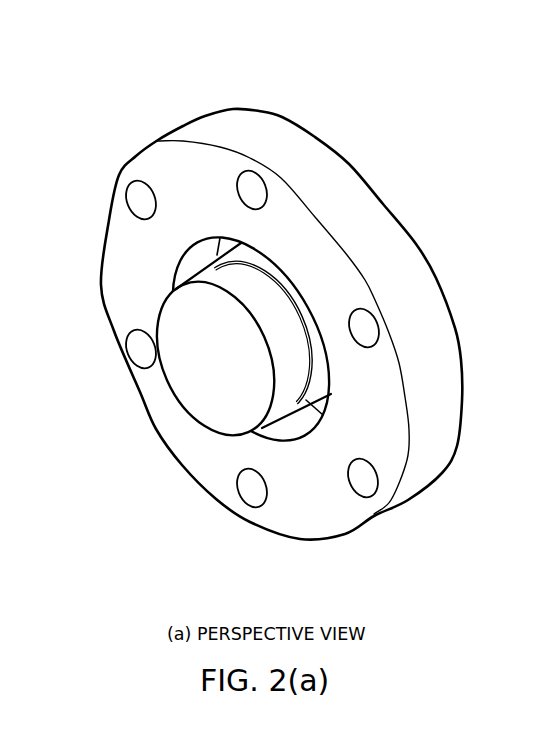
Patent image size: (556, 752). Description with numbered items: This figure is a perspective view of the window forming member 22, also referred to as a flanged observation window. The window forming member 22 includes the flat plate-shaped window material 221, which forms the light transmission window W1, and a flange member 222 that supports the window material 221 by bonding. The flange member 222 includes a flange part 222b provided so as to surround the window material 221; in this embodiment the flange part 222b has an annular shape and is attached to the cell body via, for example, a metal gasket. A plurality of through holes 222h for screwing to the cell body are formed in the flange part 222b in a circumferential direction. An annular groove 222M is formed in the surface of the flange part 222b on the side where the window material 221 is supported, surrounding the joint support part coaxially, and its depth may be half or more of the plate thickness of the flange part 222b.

The window forming member 22 is at (115, 118).
The flange member 222 is at (255, 137).
The flange part 222b is at (373, 230).
The through holes 222h is at (138, 206).
The annular groove 222M is at (333, 407).
The window material 221 is at (187, 383).
The light transmission window W1 is at (220, 387).